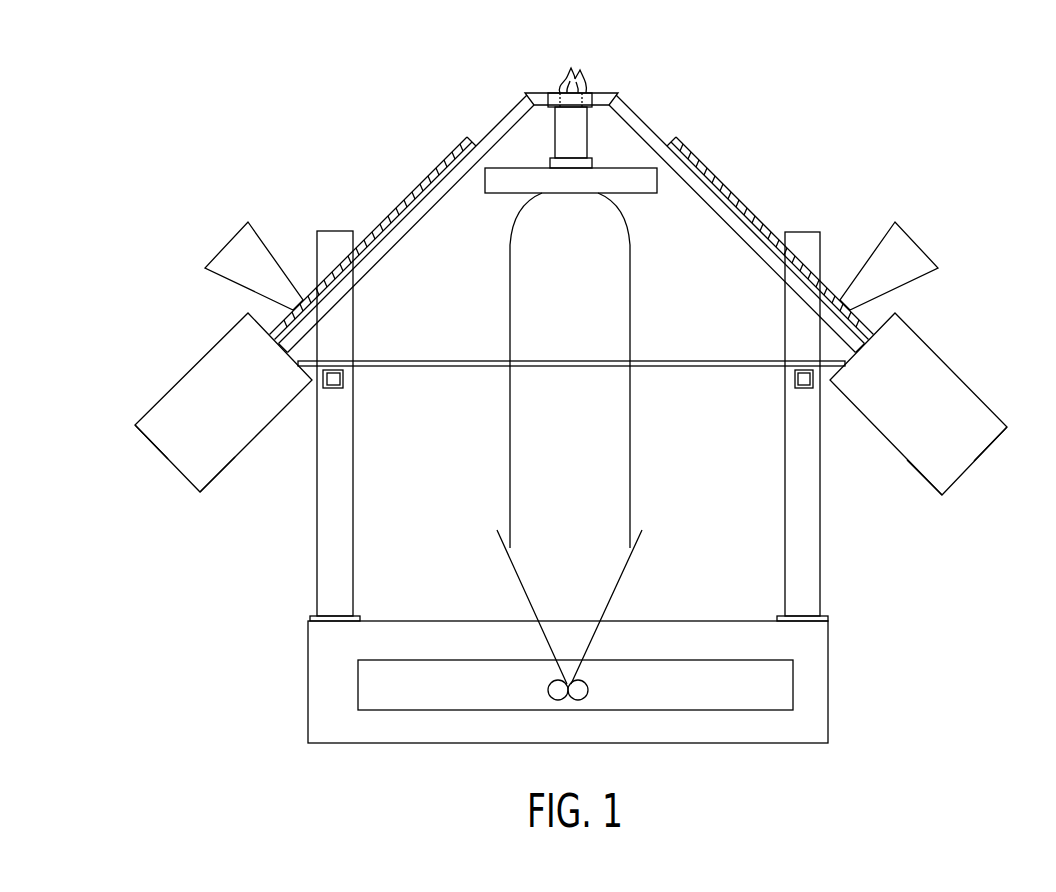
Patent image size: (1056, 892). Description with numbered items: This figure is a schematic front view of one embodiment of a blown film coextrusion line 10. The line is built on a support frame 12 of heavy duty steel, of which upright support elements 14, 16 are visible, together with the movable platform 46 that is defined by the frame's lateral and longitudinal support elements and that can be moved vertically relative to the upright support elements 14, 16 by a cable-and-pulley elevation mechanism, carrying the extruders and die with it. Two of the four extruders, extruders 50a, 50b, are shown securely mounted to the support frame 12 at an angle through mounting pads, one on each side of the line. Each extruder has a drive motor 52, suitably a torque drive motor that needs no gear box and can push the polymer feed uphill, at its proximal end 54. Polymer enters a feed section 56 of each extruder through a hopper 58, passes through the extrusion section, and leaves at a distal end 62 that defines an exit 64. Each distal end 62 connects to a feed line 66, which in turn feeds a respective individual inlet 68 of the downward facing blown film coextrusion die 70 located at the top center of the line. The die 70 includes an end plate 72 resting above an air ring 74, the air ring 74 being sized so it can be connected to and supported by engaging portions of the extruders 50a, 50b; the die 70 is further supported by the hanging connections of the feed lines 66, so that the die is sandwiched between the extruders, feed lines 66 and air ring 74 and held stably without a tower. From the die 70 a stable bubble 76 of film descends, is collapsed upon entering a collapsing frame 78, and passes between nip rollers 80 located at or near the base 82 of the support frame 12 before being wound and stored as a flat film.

The blown film coextrusion line 10 is at (750, 172).
The support frame 12 is at (830, 622).
The upright support element 14 is at (317, 546).
The upright support element 16 is at (822, 568).
The movable platform 46 is at (384, 368).
The extruder 50a is at (184, 376).
The extruder 50b is at (962, 378).
The drive motor 52 is at (193, 463).
The proximal end 54 is at (172, 436).
The feed section 56 is at (306, 329).
The hopper 58 is at (226, 243).
The distal end 62 is at (471, 137).
The exit 64 is at (482, 138).
The feed line 66 is at (516, 111).
The inlet 68 is at (571, 72).
The blown film coextrusion die 70 is at (576, 136).
The end plate 72 is at (548, 163).
The air ring 74 is at (636, 195).
The bubble 76 is at (632, 455).
The collapsing frame 78 is at (621, 577).
The nip rollers 80 is at (578, 701).
The base 82 is at (826, 707).